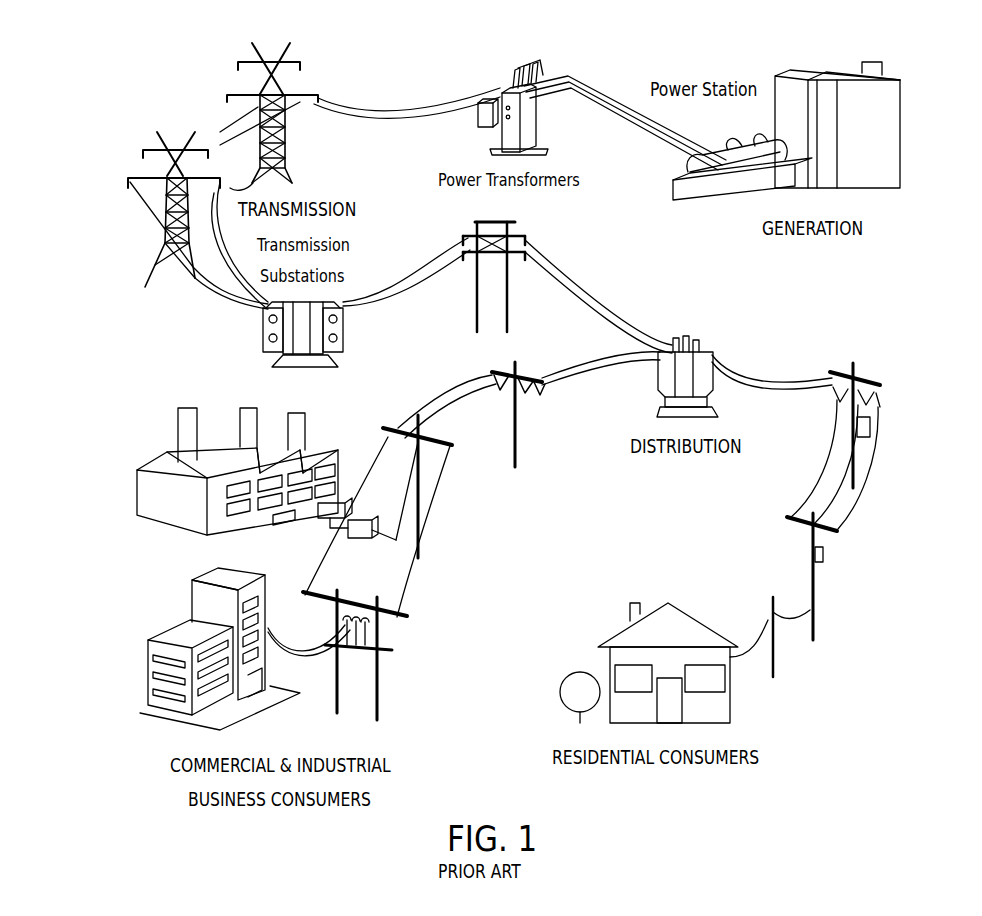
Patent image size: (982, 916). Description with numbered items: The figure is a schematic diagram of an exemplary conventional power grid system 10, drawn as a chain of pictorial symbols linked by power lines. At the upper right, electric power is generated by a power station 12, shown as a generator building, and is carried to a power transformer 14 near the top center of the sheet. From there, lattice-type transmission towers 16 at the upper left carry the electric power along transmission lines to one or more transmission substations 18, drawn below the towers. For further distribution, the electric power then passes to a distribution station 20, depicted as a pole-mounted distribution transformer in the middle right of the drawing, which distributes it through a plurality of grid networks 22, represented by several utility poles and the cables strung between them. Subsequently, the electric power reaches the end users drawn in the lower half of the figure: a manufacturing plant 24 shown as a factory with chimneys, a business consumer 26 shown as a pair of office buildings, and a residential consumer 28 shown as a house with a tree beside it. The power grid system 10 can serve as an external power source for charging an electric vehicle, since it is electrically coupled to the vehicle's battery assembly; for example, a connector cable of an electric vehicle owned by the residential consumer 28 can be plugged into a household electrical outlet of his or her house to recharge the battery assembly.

The power grid system 10 is at (82, 101).
The power station 12 is at (722, 195).
The power transformer 14 is at (478, 110).
The transmission towers 16 is at (148, 283).
The transmission substations 18 is at (320, 370).
The distribution station 20 is at (700, 340).
The grid networks 22 is at (520, 228).
The manufacturing plant 24 is at (170, 507).
The business consumer 26 is at (157, 708).
The residential consumer 28 is at (655, 612).